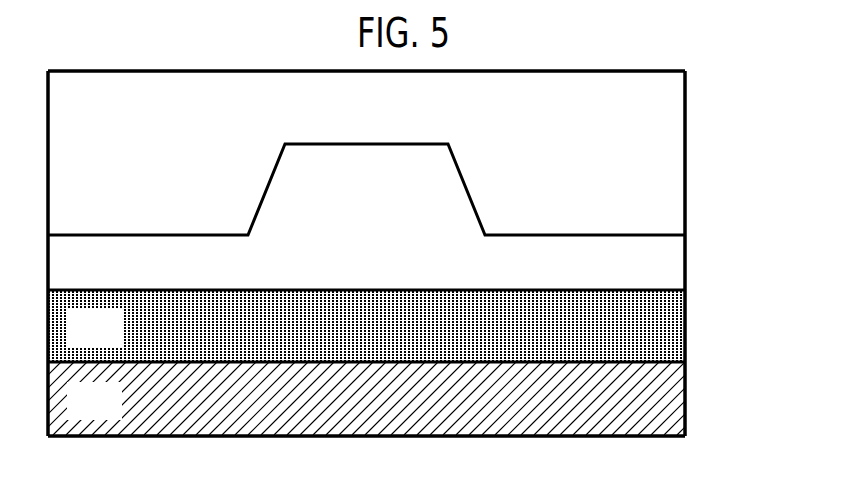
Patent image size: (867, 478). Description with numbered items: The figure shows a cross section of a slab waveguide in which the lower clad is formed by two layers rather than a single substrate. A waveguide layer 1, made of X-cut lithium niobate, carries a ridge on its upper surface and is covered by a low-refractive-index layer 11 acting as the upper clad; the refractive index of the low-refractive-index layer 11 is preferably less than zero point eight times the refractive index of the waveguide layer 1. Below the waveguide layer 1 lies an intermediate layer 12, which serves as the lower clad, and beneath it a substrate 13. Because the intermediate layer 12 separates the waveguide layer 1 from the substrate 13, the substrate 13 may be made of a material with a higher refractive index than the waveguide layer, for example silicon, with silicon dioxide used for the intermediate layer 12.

The low-refractive-index layer 11 is at (648, 128).
The waveguide layer 1 is at (648, 265).
The intermediate layer 12 is at (650, 333).
The substrate 13 is at (650, 412).